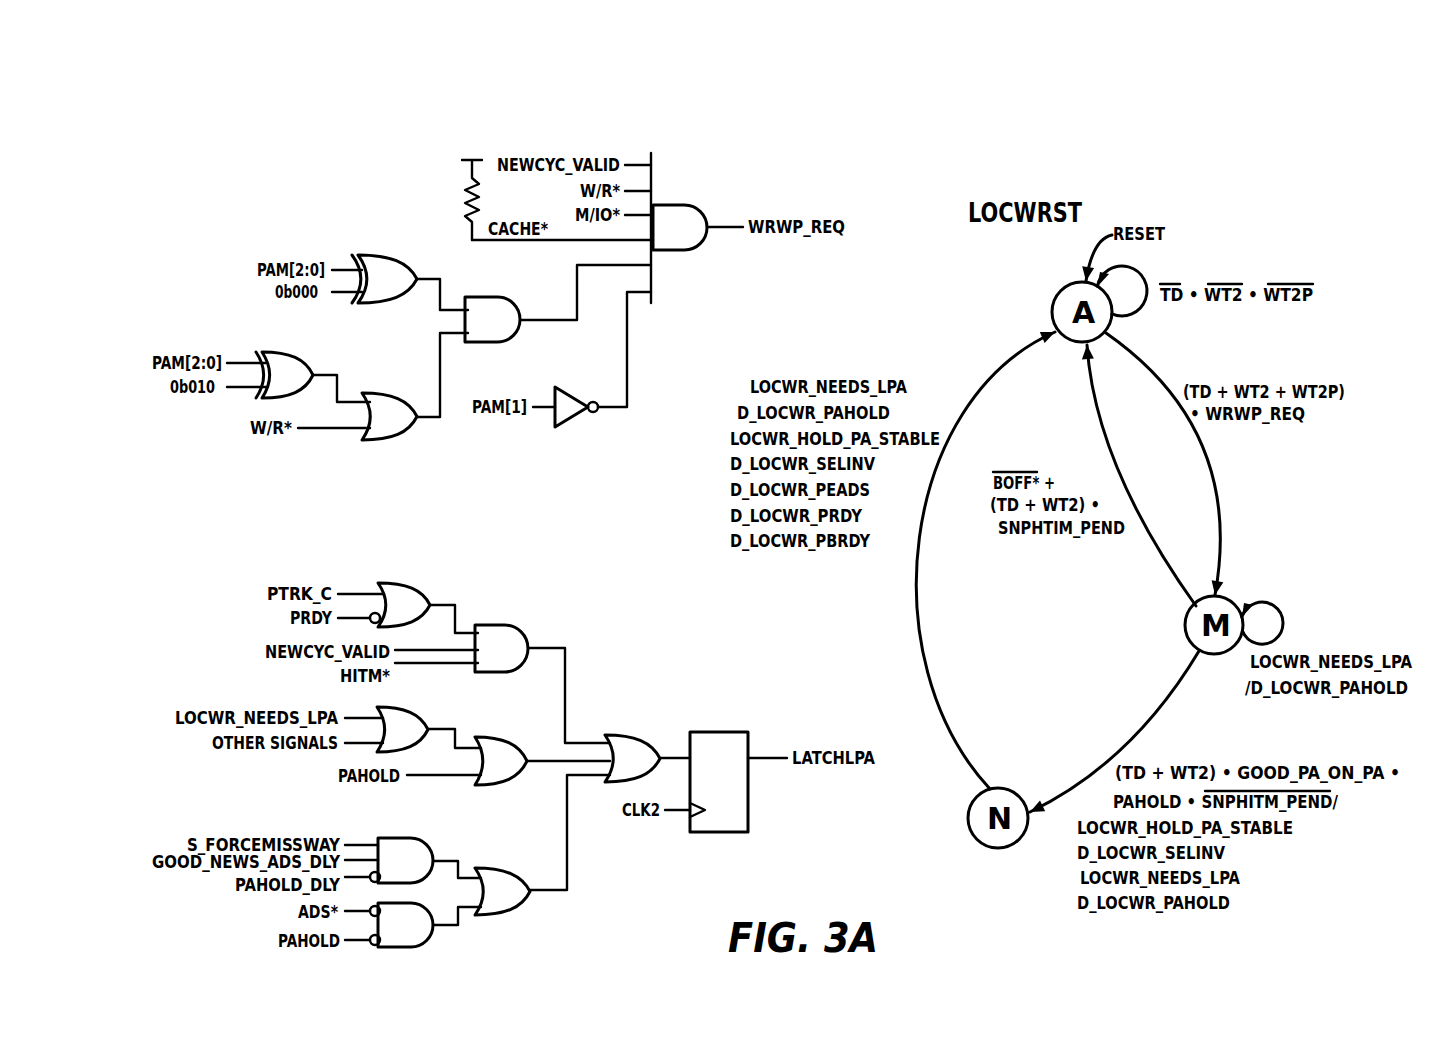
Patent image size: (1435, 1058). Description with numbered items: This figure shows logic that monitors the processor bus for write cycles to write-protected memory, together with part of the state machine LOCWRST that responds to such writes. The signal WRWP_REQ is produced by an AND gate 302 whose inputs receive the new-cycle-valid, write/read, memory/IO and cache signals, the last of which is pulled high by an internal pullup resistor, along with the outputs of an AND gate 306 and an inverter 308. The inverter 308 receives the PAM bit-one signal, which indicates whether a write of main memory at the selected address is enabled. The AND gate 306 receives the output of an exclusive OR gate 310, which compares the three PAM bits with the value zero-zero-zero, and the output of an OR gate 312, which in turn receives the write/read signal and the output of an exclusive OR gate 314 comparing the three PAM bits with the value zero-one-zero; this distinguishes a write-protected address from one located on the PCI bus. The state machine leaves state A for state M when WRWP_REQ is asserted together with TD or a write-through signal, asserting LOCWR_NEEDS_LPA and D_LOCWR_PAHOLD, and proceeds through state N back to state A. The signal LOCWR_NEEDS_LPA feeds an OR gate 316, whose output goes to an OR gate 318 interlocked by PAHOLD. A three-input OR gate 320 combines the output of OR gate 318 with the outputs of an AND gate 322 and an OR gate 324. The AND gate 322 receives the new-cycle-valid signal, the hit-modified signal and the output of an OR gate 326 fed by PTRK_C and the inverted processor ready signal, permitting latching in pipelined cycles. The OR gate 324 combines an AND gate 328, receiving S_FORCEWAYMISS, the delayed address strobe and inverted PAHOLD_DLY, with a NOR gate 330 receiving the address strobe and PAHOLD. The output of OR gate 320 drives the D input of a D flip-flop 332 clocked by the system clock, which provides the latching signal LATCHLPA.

The AND gate 302 is at (676, 205).
The AND gate 306 is at (485, 342).
The inverter 308 is at (567, 424).
The exclusive OR gate 310 is at (372, 255).
The OR gate 312 is at (383, 440).
The exclusive OR gate 314 is at (313, 365).
The OR gate 316 is at (414, 707).
The OR gate 318 is at (494, 785).
The three-input OR gate 320 is at (628, 735).
The AND gate 322 is at (497, 625).
The OR gate 324 is at (512, 912).
The OR gate 326 is at (420, 593).
The AND gate 328 is at (405, 838).
The NOR gate 330 is at (400, 947).
The D flip-flop 332 is at (718, 732).